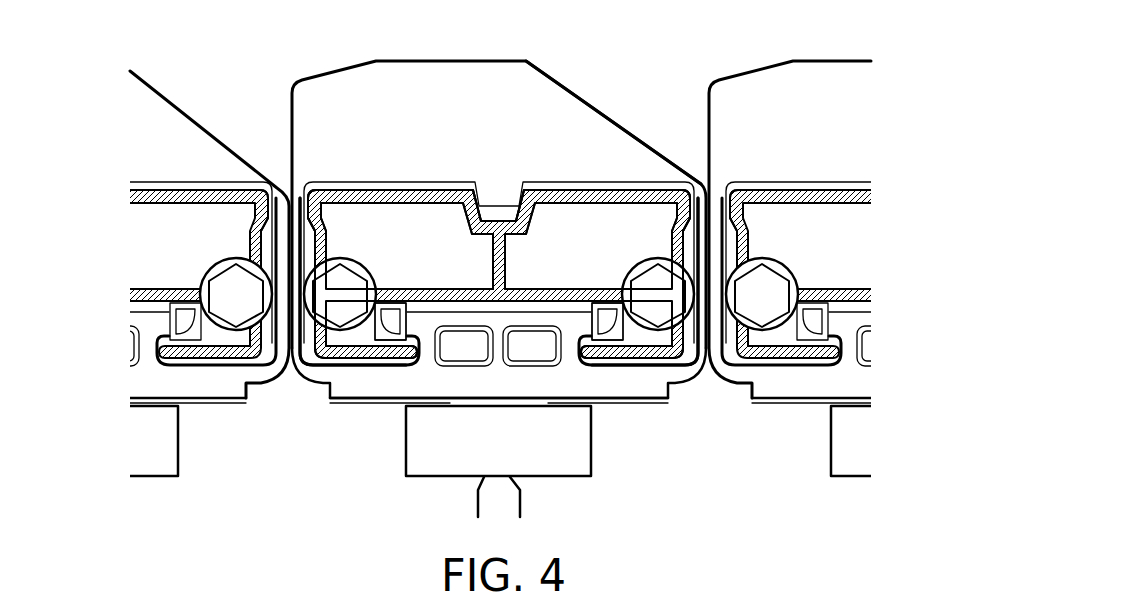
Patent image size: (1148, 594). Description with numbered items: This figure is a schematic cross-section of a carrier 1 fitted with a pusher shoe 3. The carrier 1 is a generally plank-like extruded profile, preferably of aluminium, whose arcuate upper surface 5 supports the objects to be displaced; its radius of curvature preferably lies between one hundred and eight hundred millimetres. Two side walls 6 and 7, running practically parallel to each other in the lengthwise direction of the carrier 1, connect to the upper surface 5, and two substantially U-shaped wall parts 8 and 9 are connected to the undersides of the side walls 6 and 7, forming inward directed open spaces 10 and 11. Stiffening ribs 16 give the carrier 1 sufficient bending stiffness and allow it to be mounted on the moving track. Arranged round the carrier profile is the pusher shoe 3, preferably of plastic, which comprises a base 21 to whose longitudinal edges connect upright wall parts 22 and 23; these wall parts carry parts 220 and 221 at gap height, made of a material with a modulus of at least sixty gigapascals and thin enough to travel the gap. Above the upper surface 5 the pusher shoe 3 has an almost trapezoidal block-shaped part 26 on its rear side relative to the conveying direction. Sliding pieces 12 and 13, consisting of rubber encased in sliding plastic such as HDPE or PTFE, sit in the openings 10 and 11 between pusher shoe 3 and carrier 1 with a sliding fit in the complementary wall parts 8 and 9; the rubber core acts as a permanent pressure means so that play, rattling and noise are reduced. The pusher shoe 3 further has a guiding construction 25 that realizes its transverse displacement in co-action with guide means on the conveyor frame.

The carrier 1 is at (329, 181).
The pusher shoe 3 is at (300, 66).
The arcuate upper surface 5 is at (418, 198).
The side wall 6 is at (320, 248).
The side wall 7 is at (668, 246).
The U-shaped wall part 8 is at (360, 345).
The U-shaped wall part 9 is at (630, 348).
The open space 10 is at (426, 275).
The open space 11 is at (579, 275).
The sliding piece 12 is at (385, 349).
The sliding piece 13 is at (610, 335).
The stiffening ribs 16 is at (493, 252).
The base 21 is at (389, 377).
The upright wall part 22 is at (292, 355).
The upright wall part 23 is at (693, 343).
The guiding construction 25 is at (435, 461).
The block-shaped part 26 is at (573, 117).
The part at gap's height 220 is at (261, 208).
The part at gap's height 221 is at (731, 208).